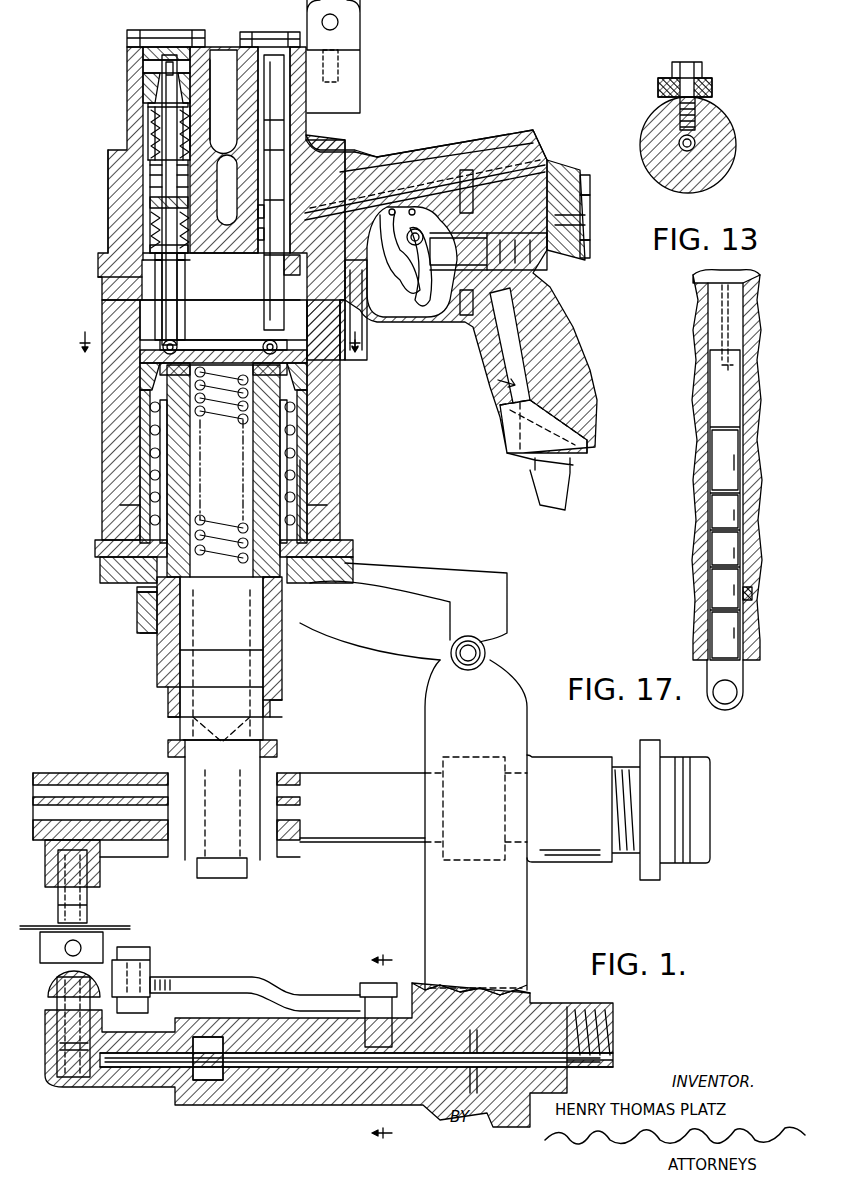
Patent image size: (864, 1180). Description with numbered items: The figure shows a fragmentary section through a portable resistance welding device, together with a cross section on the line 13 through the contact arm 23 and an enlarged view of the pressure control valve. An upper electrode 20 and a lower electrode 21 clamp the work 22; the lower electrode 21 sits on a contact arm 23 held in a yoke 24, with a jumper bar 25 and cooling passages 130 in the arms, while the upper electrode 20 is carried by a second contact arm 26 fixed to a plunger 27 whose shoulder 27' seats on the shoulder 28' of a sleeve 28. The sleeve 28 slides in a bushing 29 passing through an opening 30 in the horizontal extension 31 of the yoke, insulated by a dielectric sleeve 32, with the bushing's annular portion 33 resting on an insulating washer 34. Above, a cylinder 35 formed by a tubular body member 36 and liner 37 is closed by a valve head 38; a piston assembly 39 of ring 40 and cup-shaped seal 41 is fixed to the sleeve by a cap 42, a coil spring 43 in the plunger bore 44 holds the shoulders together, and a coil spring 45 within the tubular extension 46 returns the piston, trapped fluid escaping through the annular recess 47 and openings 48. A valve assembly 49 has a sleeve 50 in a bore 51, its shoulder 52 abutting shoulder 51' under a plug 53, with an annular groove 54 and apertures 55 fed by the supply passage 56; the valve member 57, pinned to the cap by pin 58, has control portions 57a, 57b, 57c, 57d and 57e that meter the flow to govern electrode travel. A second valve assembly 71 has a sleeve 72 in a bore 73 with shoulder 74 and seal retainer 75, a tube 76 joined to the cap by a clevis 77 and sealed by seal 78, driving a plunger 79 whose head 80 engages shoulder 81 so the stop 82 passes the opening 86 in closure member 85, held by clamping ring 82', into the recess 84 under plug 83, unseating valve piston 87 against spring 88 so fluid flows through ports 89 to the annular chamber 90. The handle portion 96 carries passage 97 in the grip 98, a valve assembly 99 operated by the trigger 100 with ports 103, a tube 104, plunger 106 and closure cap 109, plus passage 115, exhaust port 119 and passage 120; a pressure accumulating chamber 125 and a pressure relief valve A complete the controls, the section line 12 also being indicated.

In FIG. 1, the section line 12 is at (213, 347).
In FIG. 1, the section line 13 is at (389, 1044).
In FIG. 1, the upper electrode 20 is at (88, 908).
In FIG. 1, the lower electrode 21 is at (140, 942).
In FIG. 1, the work 22 is at (118, 925).
In FIG. 1, the contact arm 23 is at (262, 1105).
In FIG. 13, the contact arm 23 is at (641, 140).
In FIG. 1, the yoke 24 is at (527, 935).
In FIG. 1, the jumper bar 25 is at (265, 977).
In FIG. 13, the jumper bar 25 is at (712, 88).
In FIG. 1, the second electrical contact arm 26 is at (302, 842).
In FIG. 1, the plunger 27 is at (195, 670).
In FIG. 1, the annular shoulder 27' is at (150, 704).
In FIG. 1, the sleeve 28 is at (192, 659).
In FIG. 1, the shoulder 28' is at (205, 724).
In FIG. 1, the bushing 29 is at (142, 620).
In FIG. 1, the opening 30 is at (137, 605).
In FIG. 1, the horizontal extension 31 is at (316, 628).
In FIG. 1, the sleeve of dielectric material 32 is at (137, 588).
In FIG. 1, the annular portion 33 is at (95, 548).
In FIG. 1, the washer or gasket 34 is at (97, 565).
In FIG. 1, the cylinder 35 is at (117, 421).
In FIG. 1, the tubular body member 36 is at (130, 395).
In FIG. 1, the liner 37 is at (140, 450).
In FIG. 1, the valve head 38 is at (107, 223).
In FIG. 1, the piston assembly 39 is at (307, 355).
In FIG. 1, the ring 40 is at (300, 380).
In FIG. 1, the flexible cup-shaped seal 41 is at (305, 368).
In FIG. 1, the cap 42 is at (262, 338).
In FIG. 1, the coil spring 43 is at (235, 428).
In FIG. 1, the axial bore 44 is at (202, 490).
In FIG. 1, the coil spring 45 is at (300, 475).
In FIG. 1, the tubular extension 46 is at (150, 487).
In FIG. 1, the annular recess 47 is at (310, 490).
In FIG. 1, the openings 48 is at (330, 506).
In FIG. 1, the valve assembly 49 is at (345, 142).
In FIG. 17, the valve assembly 49 is at (688, 417).
In FIG. 1, the sleeve 50 is at (310, 120).
In FIG. 17, the sleeve 50 is at (695, 300).
In FIG. 1, the bore 51 is at (348, 56).
In FIG. 1, the shoulder 51' is at (257, 188).
In FIG. 1, the shoulder 52 is at (287, 277).
In FIG. 1, the plug 53 is at (268, 32).
In FIG. 1, the annular groove 54 is at (256, 212).
In FIG. 1, the apertures 55 is at (256, 233).
In FIG. 17, the apertures 55 is at (755, 593).
In FIG. 1, the fluid pressure supply passage 56 is at (497, 155).
In FIG. 1, the valve member 57 is at (337, 319).
In FIG. 17, the valve member 57 is at (717, 331).
In FIG. 17, the pressure control portion 57a is at (720, 630).
In FIG. 17, the pressure control portion 57b is at (718, 588).
In FIG. 17, the pressure control portion 57c is at (718, 553).
In FIG. 17, the pressure control portion 57d is at (715, 517).
In FIG. 17, the pressure control portion 57e is at (718, 462).
In FIG. 1, the pin 58 is at (360, 330).
In FIG. 17, the pin 58 is at (718, 698).
In FIG. 1, the valve assembly 71 is at (160, 152).
In FIG. 1, the sleeve 72 is at (150, 176).
In FIG. 1, the bore 73 is at (150, 203).
In FIG. 1, the annular shoulder 74 is at (186, 280).
In FIG. 1, the seal retainer 75 is at (178, 262).
In FIG. 1, the tube 76 is at (177, 302).
In FIG. 1, the clevis 77 is at (140, 372).
In FIG. 1, the seal 78 is at (100, 277).
In FIG. 1, the plunger 79 is at (110, 162).
In FIG. 1, the head 80 is at (192, 208).
In FIG. 1, the internal annular shoulder 81 is at (180, 200).
In FIG. 1, the stop 82 is at (144, 60).
In FIG. 1, the clamping ring 82' is at (122, 84).
In FIG. 1, the plug 83 is at (167, 30).
In FIG. 1, the recess 84 is at (182, 75).
In FIG. 1, the closure member 85 is at (152, 96).
In FIG. 1, the restricted opening 86 is at (150, 108).
In FIG. 1, the valve piston 87 is at (150, 165).
In FIG. 1, the spring 88 is at (195, 110).
In FIG. 1, the ports 89 is at (150, 118).
In FIG. 1, the annular chamber 90 is at (150, 130).
In FIG. 1, the handle portion 96 is at (553, 165).
In FIG. 1, the passage 97 is at (575, 352).
In FIG. 1, the grip 98 is at (583, 400).
In FIG. 1, the valve assembly 99 is at (522, 262).
In FIG. 1, the trigger 100 is at (408, 272).
In FIG. 1, the ports 103 is at (476, 302).
In FIG. 1, the tube 104 is at (452, 295).
In FIG. 1, the plunger 106 is at (435, 283).
In FIG. 1, the closure cap 109 is at (578, 190).
In FIG. 1, the passage 115 is at (393, 150).
In FIG. 1, the exhaust port 119 is at (582, 214).
In FIG. 1, the elongated passage 120 is at (548, 146).
In FIG. 1, the pressure accumulating chamber 125 is at (222, 152).
In FIG. 1, the passages 130 is at (300, 1072).
In FIG. 1, the pressure relief valve A is at (368, 257).